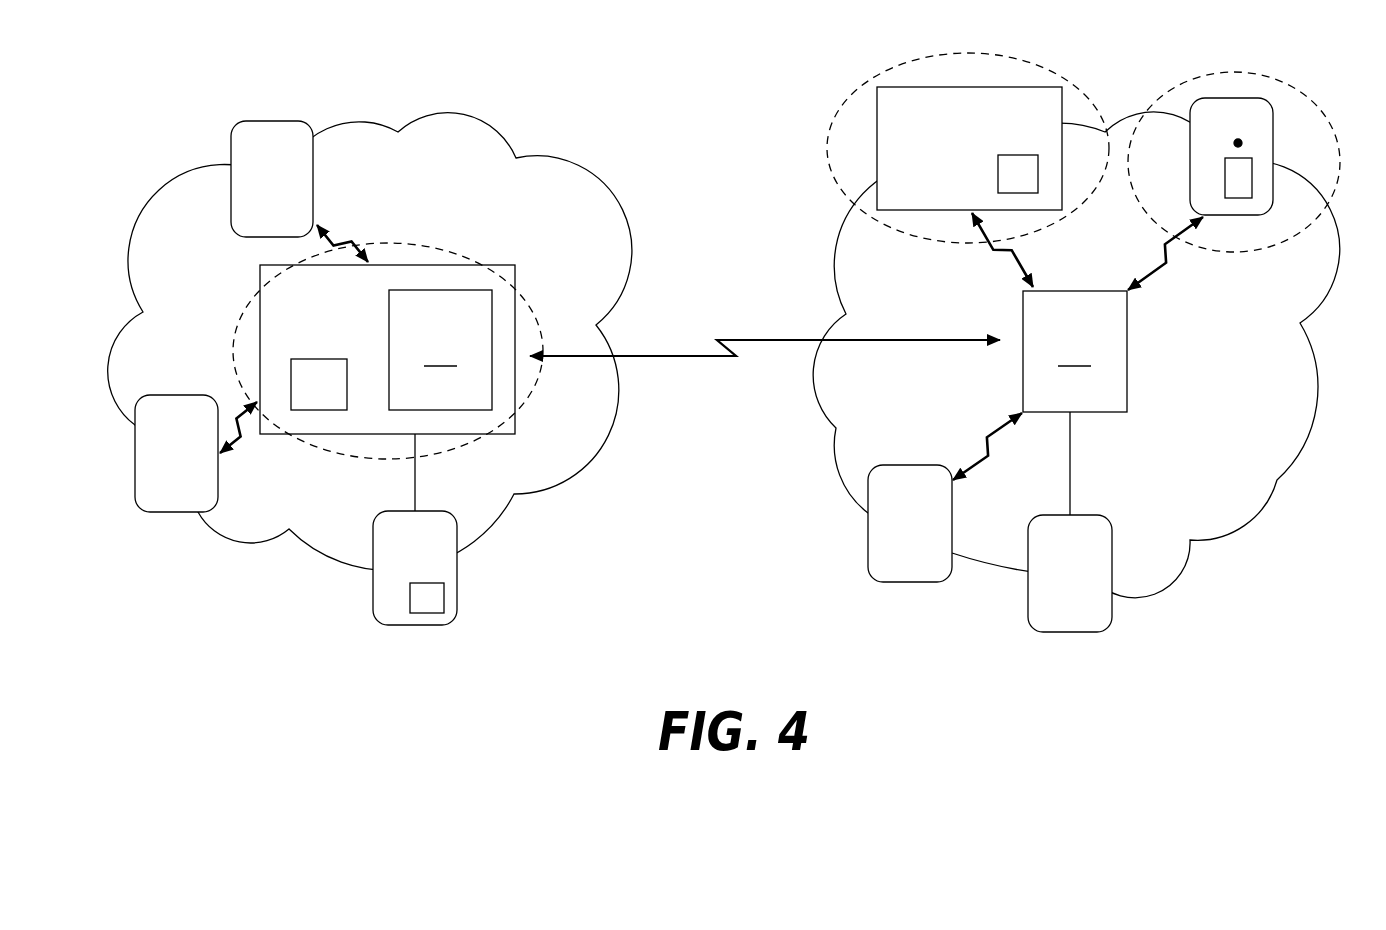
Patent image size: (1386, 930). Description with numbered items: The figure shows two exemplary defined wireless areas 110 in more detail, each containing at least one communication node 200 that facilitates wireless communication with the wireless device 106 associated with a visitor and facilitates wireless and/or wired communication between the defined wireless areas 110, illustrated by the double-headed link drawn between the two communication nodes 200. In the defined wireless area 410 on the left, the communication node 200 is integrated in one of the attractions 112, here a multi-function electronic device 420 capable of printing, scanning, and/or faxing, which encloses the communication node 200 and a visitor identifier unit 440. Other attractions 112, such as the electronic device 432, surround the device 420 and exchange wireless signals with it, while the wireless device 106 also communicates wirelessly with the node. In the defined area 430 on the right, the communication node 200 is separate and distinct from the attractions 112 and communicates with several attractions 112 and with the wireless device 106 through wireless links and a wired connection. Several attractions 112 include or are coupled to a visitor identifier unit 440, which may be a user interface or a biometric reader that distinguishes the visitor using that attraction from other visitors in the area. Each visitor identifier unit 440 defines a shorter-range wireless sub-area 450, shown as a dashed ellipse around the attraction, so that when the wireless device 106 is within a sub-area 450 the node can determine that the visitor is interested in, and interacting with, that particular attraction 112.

The wireless device 106 is at (177, 513).
The defined wireless area 110 is at (283, 597).
The attraction 112 is at (228, 148).
The communication node 200 is at (758, 351).
The defined wireless area 410 is at (157, 199).
The multi-function electronic device 420 is at (259, 362).
The defined area 430 is at (838, 238).
The electronic device 432 is at (272, 121).
The visitor identifier unit 440 is at (322, 358).
The wireless sub-area 450 is at (433, 244).